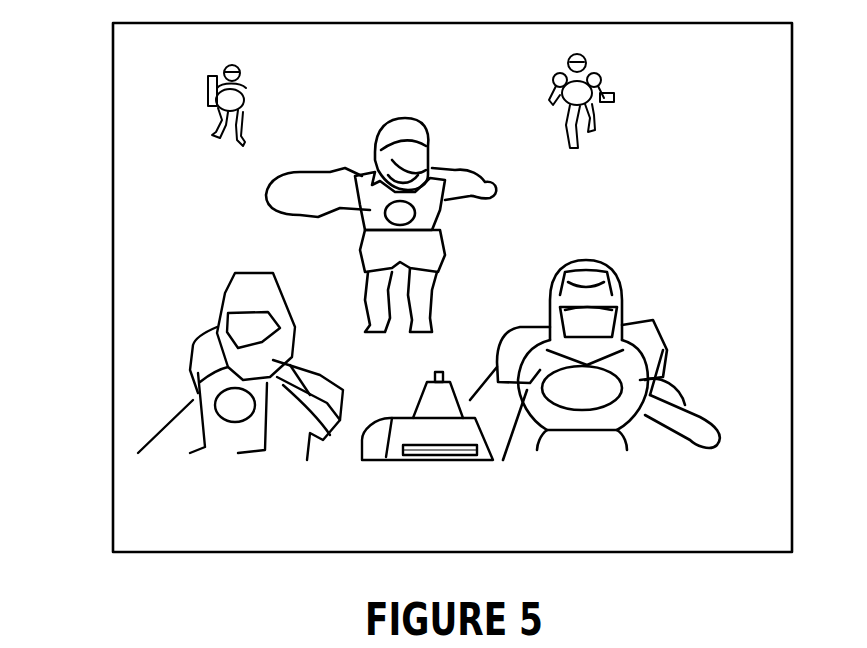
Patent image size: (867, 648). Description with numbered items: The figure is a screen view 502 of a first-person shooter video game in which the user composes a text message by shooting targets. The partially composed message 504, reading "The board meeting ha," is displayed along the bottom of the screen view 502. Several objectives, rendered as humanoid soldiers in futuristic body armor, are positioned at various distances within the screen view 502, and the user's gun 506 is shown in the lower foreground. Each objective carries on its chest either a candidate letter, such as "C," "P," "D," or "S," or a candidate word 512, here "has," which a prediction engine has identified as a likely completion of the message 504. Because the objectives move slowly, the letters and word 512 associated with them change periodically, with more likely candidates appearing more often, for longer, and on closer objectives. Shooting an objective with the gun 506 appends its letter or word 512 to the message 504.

The screen view 502 is at (758, 541).
The message 504 is at (147, 539).
The gun 506 is at (438, 461).
The word 512 is at (660, 390).